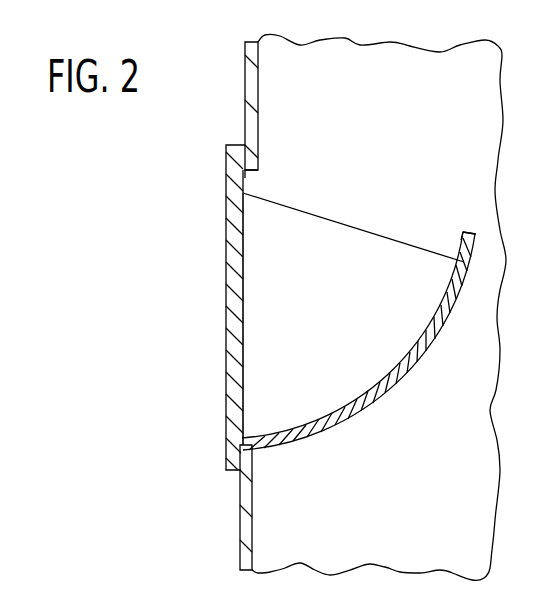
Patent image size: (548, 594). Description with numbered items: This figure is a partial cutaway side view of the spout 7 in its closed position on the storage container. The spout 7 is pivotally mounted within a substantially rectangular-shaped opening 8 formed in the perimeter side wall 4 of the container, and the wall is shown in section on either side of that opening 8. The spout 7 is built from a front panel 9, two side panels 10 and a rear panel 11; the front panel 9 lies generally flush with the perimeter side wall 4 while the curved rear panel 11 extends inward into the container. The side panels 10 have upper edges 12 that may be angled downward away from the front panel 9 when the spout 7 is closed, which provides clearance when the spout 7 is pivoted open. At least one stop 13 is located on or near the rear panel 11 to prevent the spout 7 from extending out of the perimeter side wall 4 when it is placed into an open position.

The perimeter side wall 4 is at (245, 88).
The spout 7 is at (277, 323).
The opening 8 is at (252, 182).
The front panel 9 is at (235, 249).
The side panels 10 is at (339, 318).
The rear panel 11 is at (393, 388).
The upper edges 12 is at (327, 217).
The stop 13 is at (472, 228).